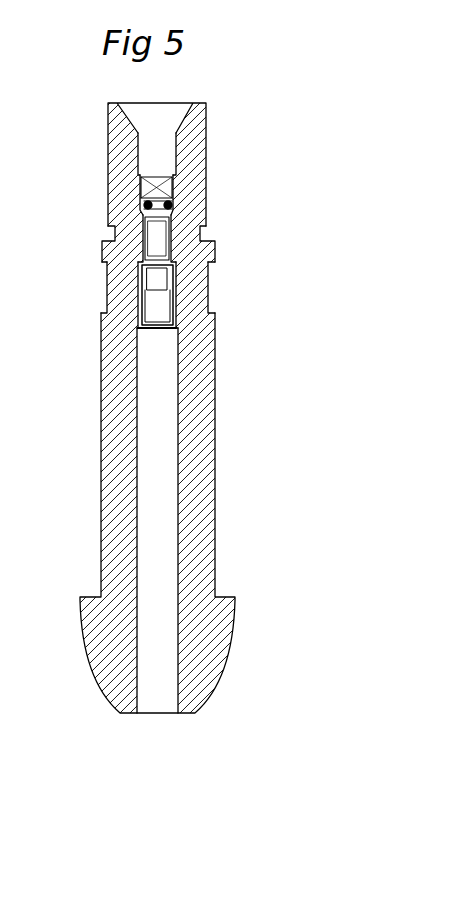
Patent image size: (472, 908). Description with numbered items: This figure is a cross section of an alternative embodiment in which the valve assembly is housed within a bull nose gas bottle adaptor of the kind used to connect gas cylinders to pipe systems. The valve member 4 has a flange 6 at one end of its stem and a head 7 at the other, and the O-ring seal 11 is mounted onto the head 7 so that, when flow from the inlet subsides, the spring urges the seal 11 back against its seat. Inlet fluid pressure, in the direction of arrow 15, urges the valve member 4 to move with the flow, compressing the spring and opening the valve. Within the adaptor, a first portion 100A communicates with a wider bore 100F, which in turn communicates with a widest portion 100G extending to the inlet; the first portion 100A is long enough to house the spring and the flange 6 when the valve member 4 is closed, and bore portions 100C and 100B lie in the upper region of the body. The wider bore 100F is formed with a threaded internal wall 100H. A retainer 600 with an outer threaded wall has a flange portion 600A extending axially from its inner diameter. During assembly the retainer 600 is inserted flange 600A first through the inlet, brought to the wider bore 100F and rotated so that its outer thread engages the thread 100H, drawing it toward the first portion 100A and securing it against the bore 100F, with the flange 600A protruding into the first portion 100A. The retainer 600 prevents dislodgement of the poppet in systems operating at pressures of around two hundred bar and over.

The head 7 is at (108, 158).
The O-ring seal 11 is at (108, 183).
The first portion 100A is at (110, 200).
The flange 6 is at (104, 236).
The flange portion 600A is at (104, 262).
The threaded internal wall 100H is at (100, 312).
The widest portion 100G is at (150, 397).
The upper bore section 100C is at (207, 178).
The intermediate bore section 100B is at (208, 202).
The valve member 4 is at (215, 243).
The wider bore 100F is at (208, 273).
The retainer 600 is at (208, 302).
The arrow 15 is at (153, 721).